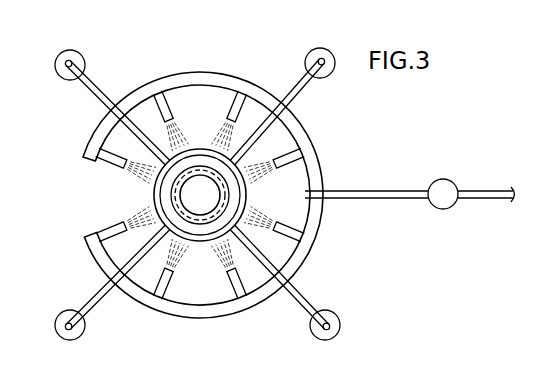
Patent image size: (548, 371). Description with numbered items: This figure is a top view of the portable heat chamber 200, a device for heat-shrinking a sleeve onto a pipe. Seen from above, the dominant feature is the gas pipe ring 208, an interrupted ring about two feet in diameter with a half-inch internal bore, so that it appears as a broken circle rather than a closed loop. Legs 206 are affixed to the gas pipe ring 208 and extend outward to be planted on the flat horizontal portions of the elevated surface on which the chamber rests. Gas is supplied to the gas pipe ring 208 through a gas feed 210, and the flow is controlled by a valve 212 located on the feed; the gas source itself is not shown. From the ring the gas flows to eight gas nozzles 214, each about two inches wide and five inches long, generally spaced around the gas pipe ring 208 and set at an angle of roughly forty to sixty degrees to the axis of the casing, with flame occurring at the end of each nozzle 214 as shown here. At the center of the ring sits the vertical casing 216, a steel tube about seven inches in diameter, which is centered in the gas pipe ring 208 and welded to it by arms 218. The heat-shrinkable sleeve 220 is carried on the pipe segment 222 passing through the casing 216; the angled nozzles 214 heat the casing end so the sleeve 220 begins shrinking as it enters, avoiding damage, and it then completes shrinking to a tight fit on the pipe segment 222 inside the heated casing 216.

The portable heat chamber 200 is at (164, 66).
The legs 206 is at (300, 78).
The gas pipe ring 208 is at (210, 76).
The gas feed 210 is at (407, 190).
The valve 212 is at (452, 180).
The gas nozzles 214 is at (152, 113).
The vertical casing 216 is at (132, 205).
The arms 218 is at (262, 137).
The heat-shrinkable sleeve 220 is at (183, 189).
The pipe segment 222 is at (179, 195).